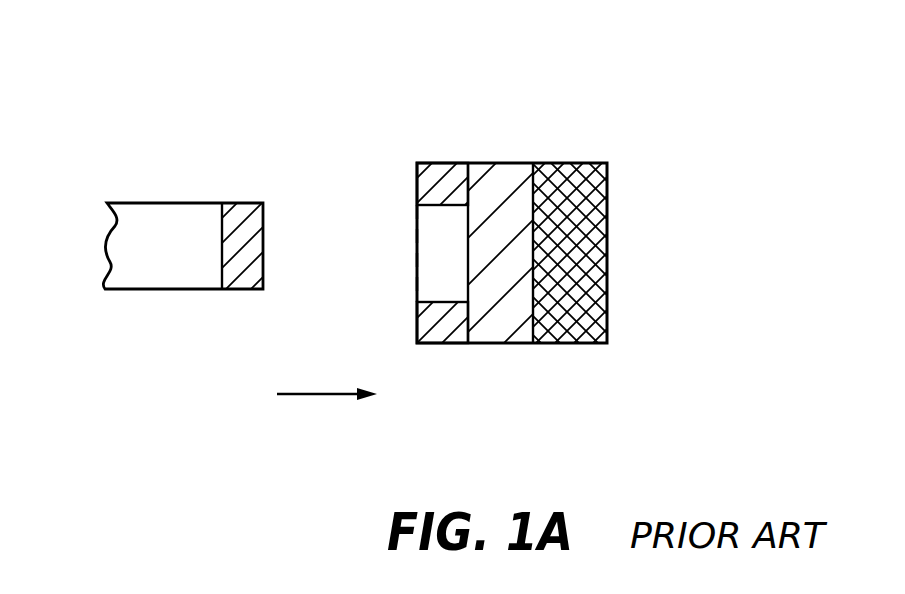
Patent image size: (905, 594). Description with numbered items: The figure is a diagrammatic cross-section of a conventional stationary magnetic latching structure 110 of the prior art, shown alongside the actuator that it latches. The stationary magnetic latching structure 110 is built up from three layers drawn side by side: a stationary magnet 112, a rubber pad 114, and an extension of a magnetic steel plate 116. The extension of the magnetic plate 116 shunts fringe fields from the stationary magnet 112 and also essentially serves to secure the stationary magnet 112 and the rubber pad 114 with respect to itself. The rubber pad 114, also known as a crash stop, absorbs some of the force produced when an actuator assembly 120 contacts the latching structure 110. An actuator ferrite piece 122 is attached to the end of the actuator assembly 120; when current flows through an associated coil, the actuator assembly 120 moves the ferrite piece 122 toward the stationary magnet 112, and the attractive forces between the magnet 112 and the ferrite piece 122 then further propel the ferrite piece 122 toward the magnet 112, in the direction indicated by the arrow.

The stationary magnetic latching structure 110 is at (562, 237).
The stationary magnet 112 is at (572, 346).
The rubber pad 114 is at (492, 346).
The extension of a magnetic steel plate 116 is at (440, 346).
The actuator assembly 120 is at (191, 199).
The actuator ferrite piece 122 is at (260, 206).